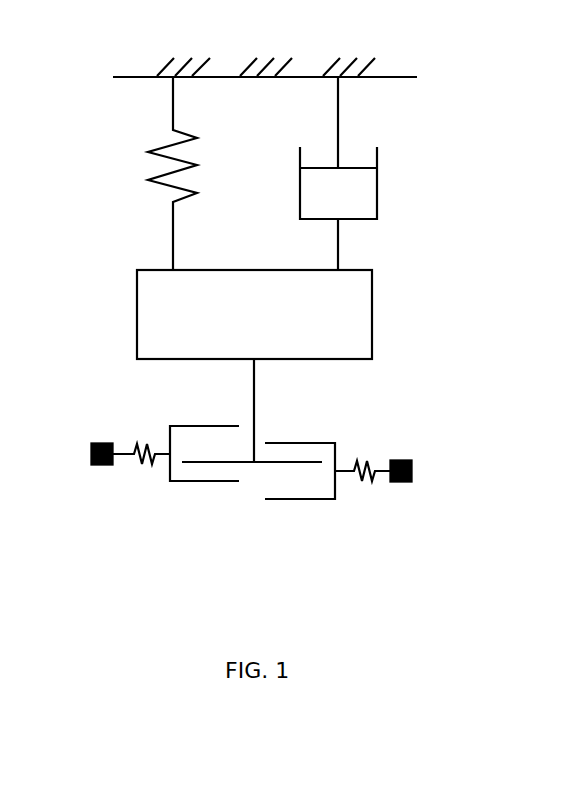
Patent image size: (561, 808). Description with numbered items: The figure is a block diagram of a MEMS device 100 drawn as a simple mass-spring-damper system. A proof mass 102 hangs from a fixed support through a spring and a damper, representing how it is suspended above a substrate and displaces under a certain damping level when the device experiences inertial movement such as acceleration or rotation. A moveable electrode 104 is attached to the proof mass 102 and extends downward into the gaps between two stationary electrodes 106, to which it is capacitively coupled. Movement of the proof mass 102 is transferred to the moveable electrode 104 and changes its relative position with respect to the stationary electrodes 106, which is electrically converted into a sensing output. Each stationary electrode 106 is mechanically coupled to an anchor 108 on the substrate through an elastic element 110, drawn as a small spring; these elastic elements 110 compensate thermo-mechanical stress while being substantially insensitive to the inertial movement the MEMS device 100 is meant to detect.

The MEMS device 100 is at (254, 341).
The proof mass 102 is at (373, 285).
The moveable electrode 104 is at (302, 463).
The stationary electrode 106 is at (170, 472).
The anchor 108 is at (91, 460).
The elastic element 110 is at (140, 443).